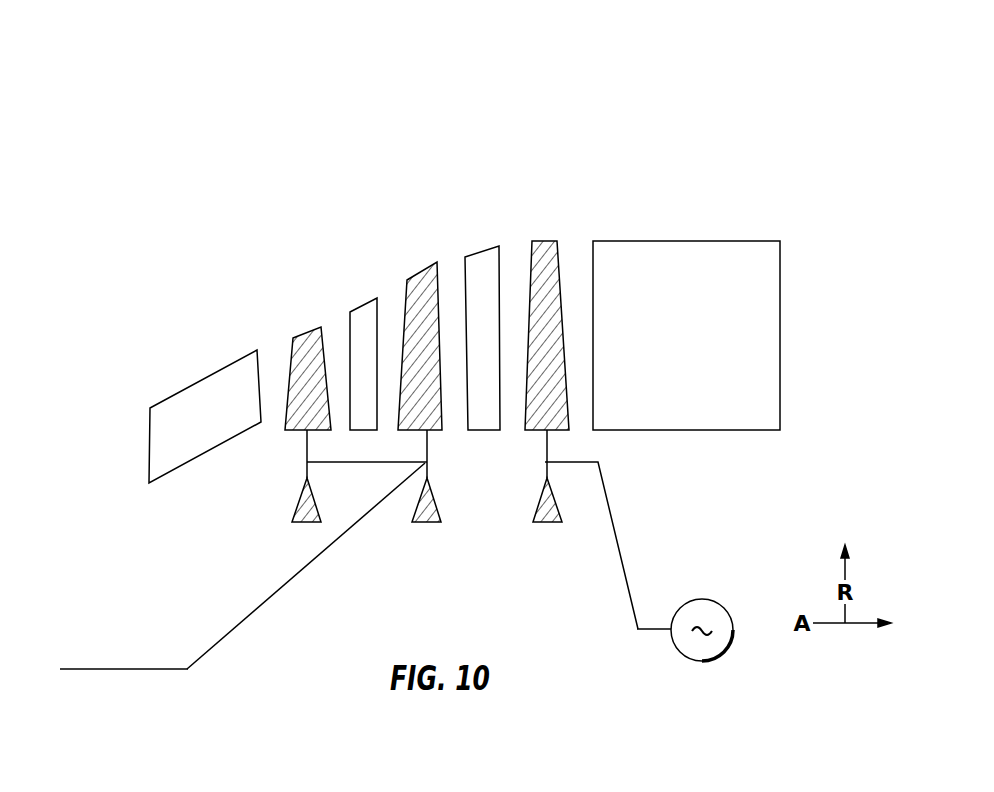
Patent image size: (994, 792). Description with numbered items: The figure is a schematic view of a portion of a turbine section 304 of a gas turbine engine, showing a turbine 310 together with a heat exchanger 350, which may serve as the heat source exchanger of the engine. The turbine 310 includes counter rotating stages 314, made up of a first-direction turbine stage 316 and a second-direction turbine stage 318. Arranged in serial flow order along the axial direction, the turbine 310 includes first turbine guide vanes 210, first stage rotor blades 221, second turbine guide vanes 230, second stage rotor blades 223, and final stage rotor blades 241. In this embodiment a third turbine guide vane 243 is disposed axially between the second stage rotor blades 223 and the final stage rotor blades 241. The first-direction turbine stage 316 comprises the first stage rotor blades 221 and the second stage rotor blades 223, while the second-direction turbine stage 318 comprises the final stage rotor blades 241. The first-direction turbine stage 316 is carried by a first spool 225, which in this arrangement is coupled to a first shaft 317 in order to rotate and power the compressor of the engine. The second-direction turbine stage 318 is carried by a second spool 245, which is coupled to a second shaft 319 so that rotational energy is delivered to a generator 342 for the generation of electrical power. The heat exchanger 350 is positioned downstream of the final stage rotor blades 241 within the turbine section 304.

The first turbine guide vanes 210 is at (185, 430).
The first stage rotor blades 221 is at (305, 338).
The second stage rotor blades 223 is at (423, 282).
The first spool 225 is at (317, 560).
The second turbine guide vanes 230 is at (368, 313).
The final stage rotor blades 241 is at (543, 243).
The third turbine guide vane 243 is at (485, 257).
The second spool 245 is at (585, 458).
The turbine section 304 is at (540, 84).
The turbine 310 is at (592, 152).
The counter rotating stages 314 is at (449, 92).
The first-direction turbine stage 316 is at (390, 172).
The first shaft 317 is at (117, 669).
The second-direction turbine stage 318 is at (588, 216).
The second shaft 319 is at (653, 633).
The generator 342 is at (708, 611).
The heat exchanger 350 is at (705, 346).